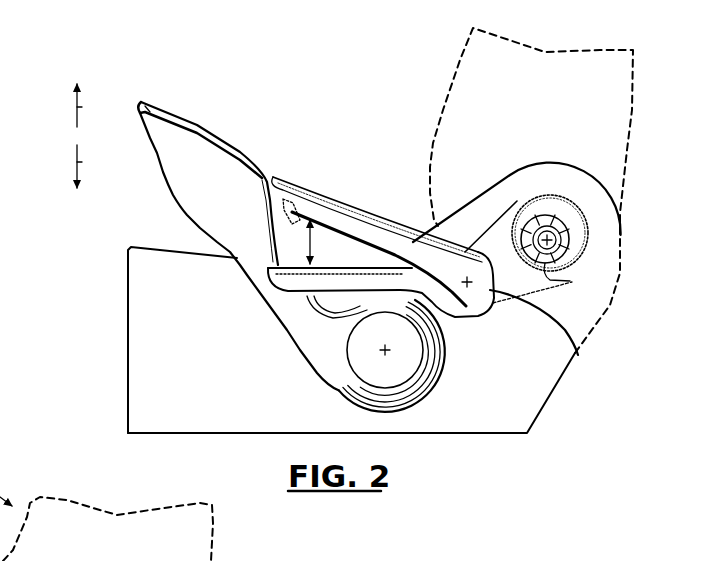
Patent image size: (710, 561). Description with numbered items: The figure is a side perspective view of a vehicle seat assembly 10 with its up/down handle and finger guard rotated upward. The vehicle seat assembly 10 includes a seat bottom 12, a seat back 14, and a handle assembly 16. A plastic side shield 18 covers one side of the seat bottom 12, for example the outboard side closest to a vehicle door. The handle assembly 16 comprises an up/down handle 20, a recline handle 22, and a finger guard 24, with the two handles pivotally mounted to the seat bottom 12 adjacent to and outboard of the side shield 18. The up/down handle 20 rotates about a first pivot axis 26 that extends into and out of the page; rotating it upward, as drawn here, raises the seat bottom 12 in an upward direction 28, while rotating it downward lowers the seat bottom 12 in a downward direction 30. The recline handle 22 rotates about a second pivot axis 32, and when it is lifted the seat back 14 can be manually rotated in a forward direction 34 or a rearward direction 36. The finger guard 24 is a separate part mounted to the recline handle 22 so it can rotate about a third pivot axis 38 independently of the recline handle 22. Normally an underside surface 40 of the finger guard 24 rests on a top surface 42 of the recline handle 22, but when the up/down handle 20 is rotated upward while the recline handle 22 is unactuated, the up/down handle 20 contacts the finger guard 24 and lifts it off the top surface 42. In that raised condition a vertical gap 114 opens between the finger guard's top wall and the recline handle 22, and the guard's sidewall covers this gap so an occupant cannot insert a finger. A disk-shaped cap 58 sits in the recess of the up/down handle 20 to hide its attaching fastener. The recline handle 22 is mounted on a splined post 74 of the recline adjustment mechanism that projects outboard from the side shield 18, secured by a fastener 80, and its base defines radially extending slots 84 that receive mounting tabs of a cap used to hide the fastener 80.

The vehicle seat assembly 10 is at (95, 61).
The seat bottom 12 is at (153, 247).
The seat back 14 is at (444, 62).
The handle assembly 16 is at (253, 133).
The side shield 18 is at (503, 352).
The up/down handle 20 is at (182, 113).
The recline handle 22 is at (502, 205).
The finger guard 24 is at (318, 192).
The first pivot axis 26 is at (390, 350).
The upward direction 28 is at (82, 107).
The downward direction 30 is at (82, 162).
The second pivot axis 32 is at (550, 242).
The forward direction 34 is at (327, 85).
The rearward direction 36 is at (410, 80).
The third pivot axis 38 is at (583, 358).
The underside surface 40 is at (368, 267).
The top surface 42 is at (370, 247).
The cap 58 is at (377, 368).
The post 74 is at (552, 237).
The fastener 80 is at (554, 242).
The slots 84 is at (470, 282).
The vertical gap 114 is at (290, 208).